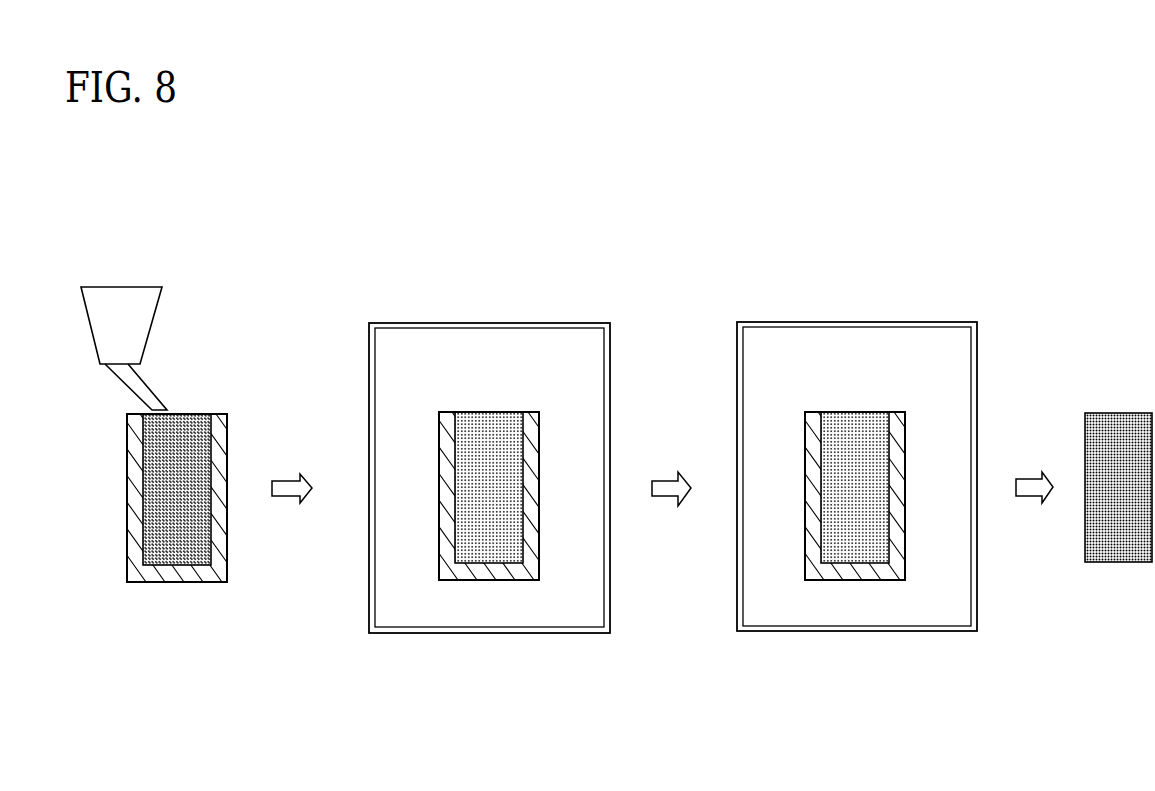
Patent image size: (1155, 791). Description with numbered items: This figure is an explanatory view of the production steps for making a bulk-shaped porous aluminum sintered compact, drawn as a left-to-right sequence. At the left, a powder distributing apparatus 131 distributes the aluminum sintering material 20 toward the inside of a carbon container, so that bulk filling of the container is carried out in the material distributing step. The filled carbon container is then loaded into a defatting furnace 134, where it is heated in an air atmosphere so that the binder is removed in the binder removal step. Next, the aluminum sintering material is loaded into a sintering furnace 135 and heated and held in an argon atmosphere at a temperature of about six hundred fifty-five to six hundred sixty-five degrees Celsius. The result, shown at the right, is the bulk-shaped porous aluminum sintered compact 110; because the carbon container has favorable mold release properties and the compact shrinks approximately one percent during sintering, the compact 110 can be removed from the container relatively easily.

The powder distributing apparatus 131 is at (122, 300).
The aluminum sintering material 20 is at (186, 424).
The defatting furnace 134 is at (412, 634).
The sintering furnace 135 is at (773, 632).
The bulk-shaped porous aluminum sintered compact 110 is at (1117, 580).